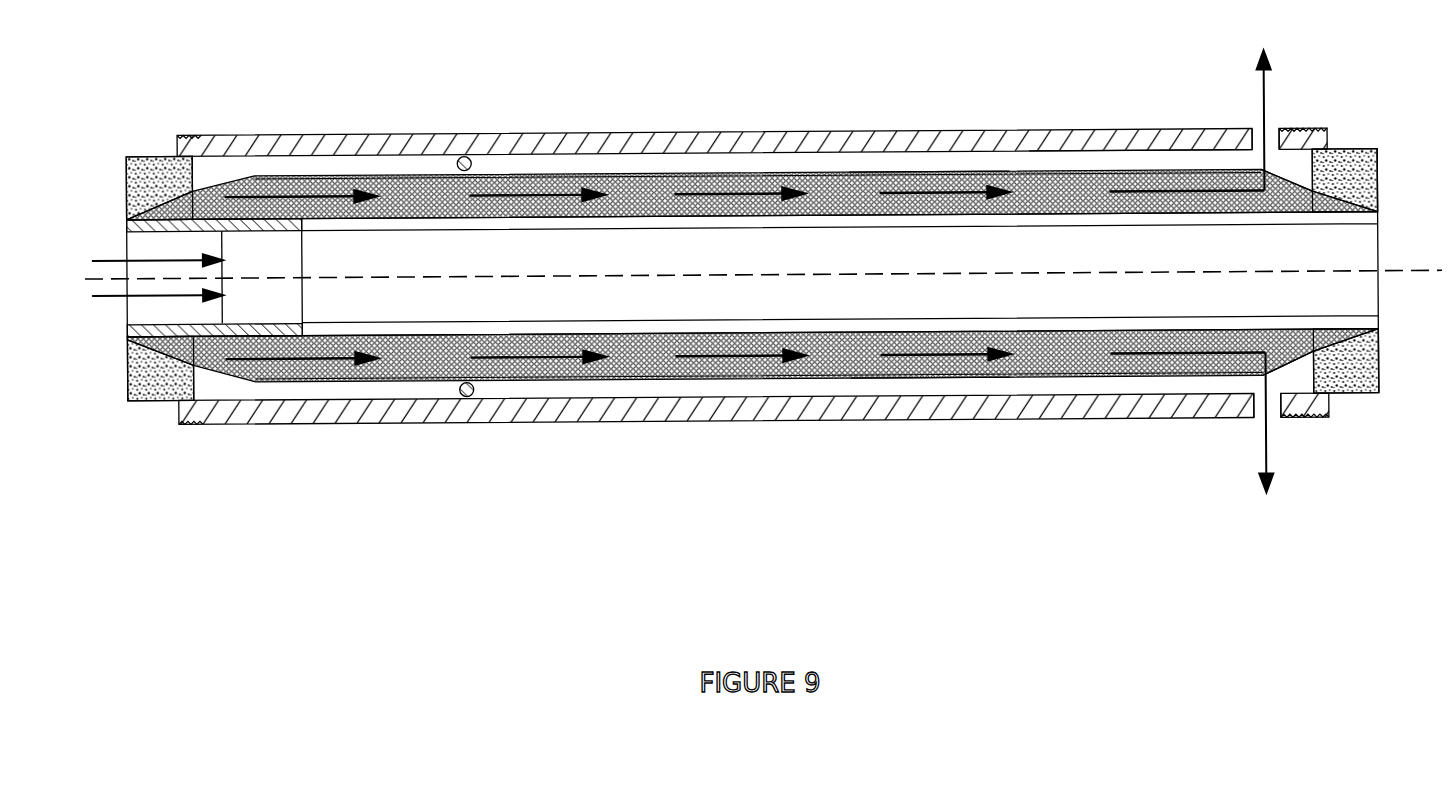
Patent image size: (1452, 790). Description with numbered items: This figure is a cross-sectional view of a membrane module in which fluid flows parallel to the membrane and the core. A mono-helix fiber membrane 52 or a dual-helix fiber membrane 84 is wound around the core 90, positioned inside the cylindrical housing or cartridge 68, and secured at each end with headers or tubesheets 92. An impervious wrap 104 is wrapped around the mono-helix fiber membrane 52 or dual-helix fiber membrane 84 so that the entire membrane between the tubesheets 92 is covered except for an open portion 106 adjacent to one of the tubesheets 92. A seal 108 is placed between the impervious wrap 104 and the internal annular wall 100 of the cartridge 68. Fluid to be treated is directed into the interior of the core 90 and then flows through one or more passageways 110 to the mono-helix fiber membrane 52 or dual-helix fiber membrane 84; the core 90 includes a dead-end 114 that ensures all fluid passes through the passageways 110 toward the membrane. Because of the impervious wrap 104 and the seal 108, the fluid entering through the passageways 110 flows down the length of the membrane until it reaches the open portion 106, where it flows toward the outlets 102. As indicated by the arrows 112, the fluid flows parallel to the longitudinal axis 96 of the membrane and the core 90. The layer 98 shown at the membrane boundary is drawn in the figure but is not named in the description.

The mono-helix fiber membrane 52 is at (753, 287).
The dual-helix fiber membrane 84 is at (410, 177).
The cylindrical housing or cartridge 68 is at (606, 136).
The core 90 is at (941, 233).
The headers or tubesheets 92 is at (138, 175).
The longitudinal axis 96 is at (1433, 278).
The filter membrane layer 98 is at (689, 164).
The internal annular wall 100 is at (1032, 156).
The outlets 102 is at (1258, 135).
The impervious wrap 104 is at (1009, 175).
The open portion 106 is at (1287, 180).
The seal 108 is at (465, 158).
The passageways 110 is at (221, 219).
The arrows 112 is at (943, 191).
The dead-end 114 is at (303, 244).